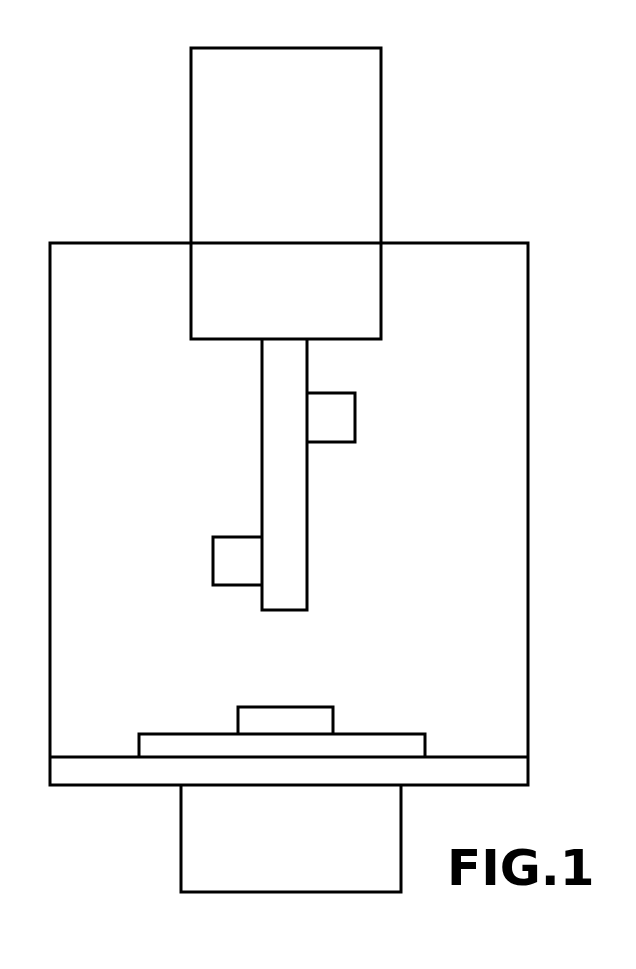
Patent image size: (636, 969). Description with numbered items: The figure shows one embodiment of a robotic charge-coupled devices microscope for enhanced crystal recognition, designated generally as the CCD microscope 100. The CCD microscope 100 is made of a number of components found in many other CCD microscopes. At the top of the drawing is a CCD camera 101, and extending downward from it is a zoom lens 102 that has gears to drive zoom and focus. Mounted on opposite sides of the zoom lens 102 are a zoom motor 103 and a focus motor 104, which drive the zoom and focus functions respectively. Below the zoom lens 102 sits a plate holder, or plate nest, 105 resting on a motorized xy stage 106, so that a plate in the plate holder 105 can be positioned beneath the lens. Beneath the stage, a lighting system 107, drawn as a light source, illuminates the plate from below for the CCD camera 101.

The robotic charge-coupled devices microscope 100 is at (427, 137).
The CCD camera 101 is at (312, 196).
The zoom lens 102 is at (262, 452).
The zoom motor 103 is at (355, 415).
The focus motor 104 is at (213, 577).
The plate holder 105 is at (307, 707).
The motorized xy stage 106 is at (180, 734).
The lighting system 107 is at (181, 840).